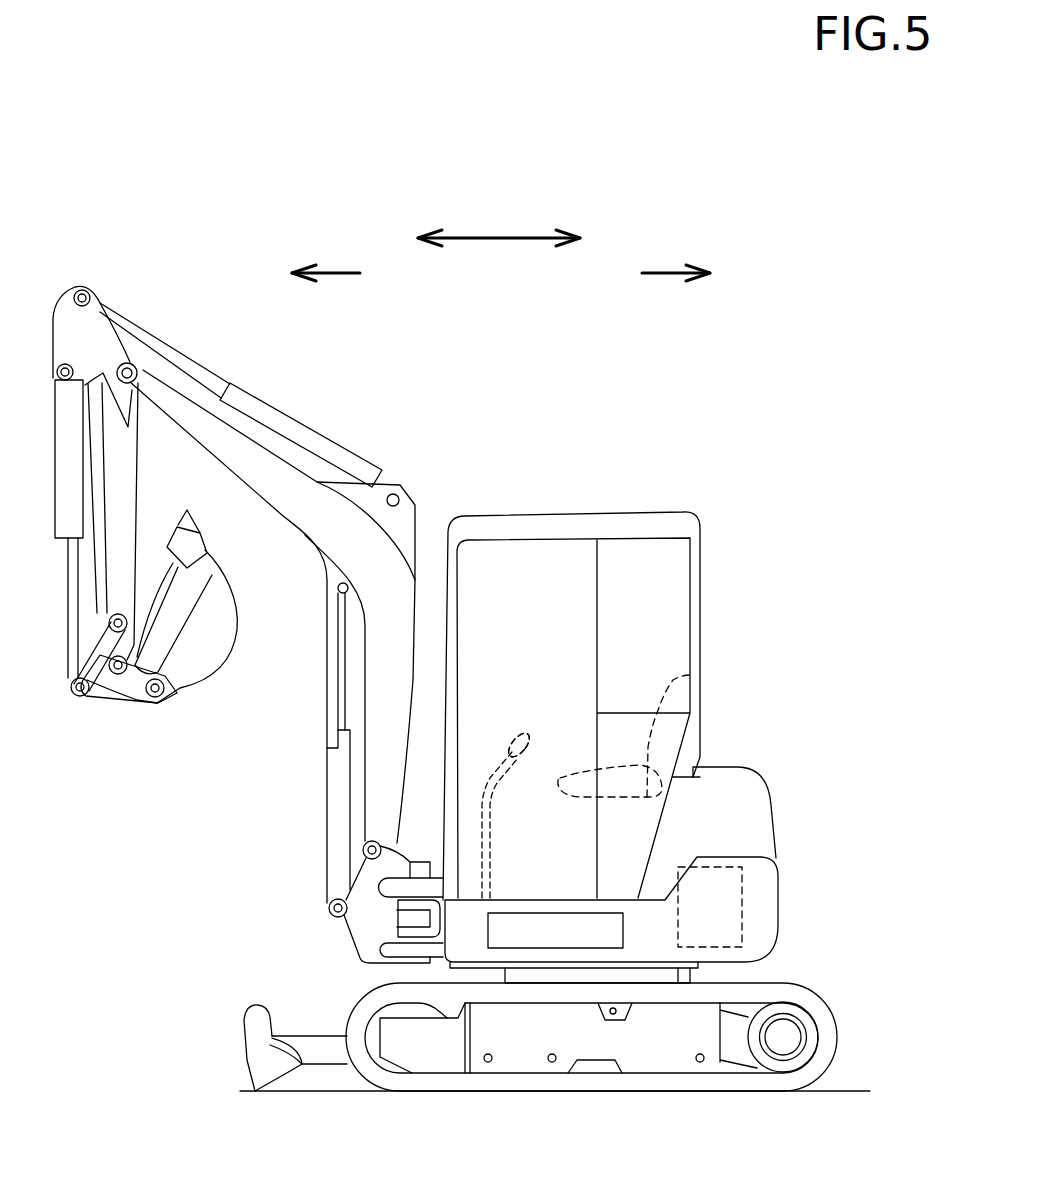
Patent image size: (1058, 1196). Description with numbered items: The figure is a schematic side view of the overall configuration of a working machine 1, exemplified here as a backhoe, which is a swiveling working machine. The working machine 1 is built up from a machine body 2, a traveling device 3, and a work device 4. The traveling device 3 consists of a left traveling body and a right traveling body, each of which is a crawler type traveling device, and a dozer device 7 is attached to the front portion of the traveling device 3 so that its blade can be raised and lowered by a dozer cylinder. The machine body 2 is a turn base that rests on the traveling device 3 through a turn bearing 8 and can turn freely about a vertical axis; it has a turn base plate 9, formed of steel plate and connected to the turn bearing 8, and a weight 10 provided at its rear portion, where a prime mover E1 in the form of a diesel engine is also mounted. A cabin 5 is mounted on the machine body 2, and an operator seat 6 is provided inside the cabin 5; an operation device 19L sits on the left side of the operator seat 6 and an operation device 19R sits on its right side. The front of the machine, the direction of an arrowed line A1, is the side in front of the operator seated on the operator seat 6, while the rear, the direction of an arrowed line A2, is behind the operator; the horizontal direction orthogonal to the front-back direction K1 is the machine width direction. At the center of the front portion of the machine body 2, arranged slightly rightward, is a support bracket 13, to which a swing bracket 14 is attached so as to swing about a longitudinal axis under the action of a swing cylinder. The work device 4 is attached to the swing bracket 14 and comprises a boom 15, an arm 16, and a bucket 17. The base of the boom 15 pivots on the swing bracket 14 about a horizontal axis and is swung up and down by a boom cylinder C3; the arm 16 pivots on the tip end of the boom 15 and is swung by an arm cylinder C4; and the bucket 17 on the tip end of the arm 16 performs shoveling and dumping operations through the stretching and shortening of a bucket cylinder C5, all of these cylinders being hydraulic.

The working machine 1 is at (777, 580).
The machine body 2 is at (451, 978).
The traveling device 3 is at (836, 1007).
The work device 4 is at (407, 478).
The cabin 5 is at (704, 555).
The operator seat 6 is at (663, 695).
The dozer device 7 is at (316, 1030).
The turn bearing 8 is at (665, 973).
The turn base plate 9 is at (503, 975).
The weight 10 is at (765, 882).
The support bracket 13 is at (410, 887).
The swing bracket 14 is at (347, 935).
The boom 15 is at (348, 523).
The arm 16 is at (117, 487).
The bucket 17 is at (222, 647).
The operation device 19L is at (522, 727).
The operation device 19R is at (522, 727).
The arrowed line A1 is at (337, 271).
The arrowed line A2 is at (671, 271).
The boom cylinder C3 is at (337, 793).
The arm cylinder C4 is at (267, 403).
The bucket cylinder C5 is at (70, 520).
The prime mover E1 is at (742, 912).
The front-back direction K1 is at (503, 236).